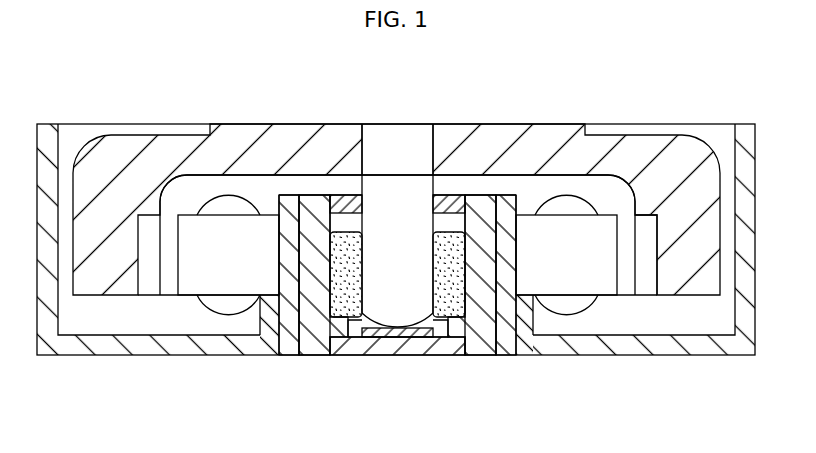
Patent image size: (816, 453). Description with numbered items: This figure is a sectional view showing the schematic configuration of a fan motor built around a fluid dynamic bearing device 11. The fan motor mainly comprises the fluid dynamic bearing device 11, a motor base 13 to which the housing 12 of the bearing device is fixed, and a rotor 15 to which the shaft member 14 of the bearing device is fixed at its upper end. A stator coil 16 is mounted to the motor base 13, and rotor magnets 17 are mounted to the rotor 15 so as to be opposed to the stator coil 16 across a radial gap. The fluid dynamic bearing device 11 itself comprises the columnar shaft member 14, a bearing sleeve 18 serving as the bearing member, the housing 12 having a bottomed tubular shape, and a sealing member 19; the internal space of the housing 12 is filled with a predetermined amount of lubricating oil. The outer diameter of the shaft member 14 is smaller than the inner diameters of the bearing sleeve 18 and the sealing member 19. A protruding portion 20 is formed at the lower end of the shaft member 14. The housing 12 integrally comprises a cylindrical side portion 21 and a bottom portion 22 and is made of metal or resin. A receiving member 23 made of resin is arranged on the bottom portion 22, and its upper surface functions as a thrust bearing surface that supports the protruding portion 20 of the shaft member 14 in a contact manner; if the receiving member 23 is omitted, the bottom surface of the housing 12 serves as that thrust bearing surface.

The fluid dynamic bearing device 11 is at (476, 188).
The housing 12 is at (438, 348).
The motor base 13 is at (523, 341).
The shaft member 14 is at (417, 121).
The rotor 15 is at (637, 152).
The stator coil 16 is at (607, 285).
The rotor magnets 17 is at (647, 285).
The bearing sleeve 18 is at (452, 302).
The sealing member 19 is at (338, 204).
The protruding portion 20 is at (360, 322).
The cylindrical side portion 21 is at (313, 293).
The bottom portion 22 is at (414, 340).
The receiving member 23 is at (376, 338).